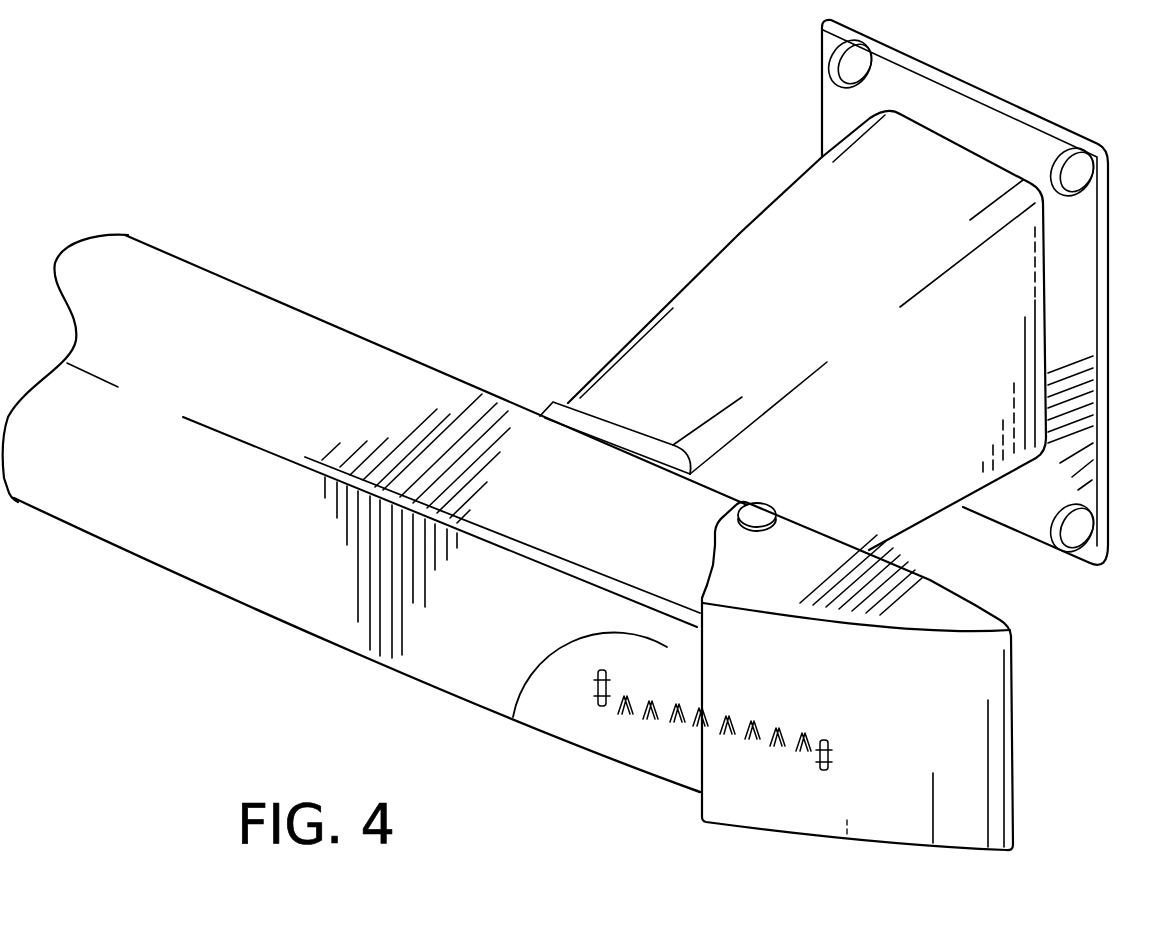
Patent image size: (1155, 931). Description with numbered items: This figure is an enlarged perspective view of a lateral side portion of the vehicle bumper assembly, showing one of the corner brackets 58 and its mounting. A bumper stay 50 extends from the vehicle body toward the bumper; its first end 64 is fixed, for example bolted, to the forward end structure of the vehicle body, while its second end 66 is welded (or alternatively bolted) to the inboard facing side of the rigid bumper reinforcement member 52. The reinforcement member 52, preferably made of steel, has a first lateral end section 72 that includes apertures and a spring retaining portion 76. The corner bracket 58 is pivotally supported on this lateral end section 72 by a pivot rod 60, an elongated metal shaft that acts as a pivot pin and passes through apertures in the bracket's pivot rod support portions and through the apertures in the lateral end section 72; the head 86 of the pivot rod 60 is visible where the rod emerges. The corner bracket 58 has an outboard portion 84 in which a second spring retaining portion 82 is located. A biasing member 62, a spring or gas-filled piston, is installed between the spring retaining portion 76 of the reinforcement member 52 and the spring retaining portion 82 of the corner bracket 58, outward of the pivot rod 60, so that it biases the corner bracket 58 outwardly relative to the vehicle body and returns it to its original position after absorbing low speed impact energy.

The bumper stay 50 is at (788, 252).
The rigid bumper reinforcement member 52 is at (228, 338).
The corner bracket 58 is at (888, 712).
The pivot rod 60 is at (825, 495).
The biasing member 62 is at (655, 727).
The first end 64 is at (973, 127).
The second end 66 is at (612, 407).
The first lateral end section 72 is at (513, 717).
The spring retaining portion 76 is at (583, 717).
The spring retaining portion 82 is at (800, 787).
The outboard portion 84 is at (963, 823).
The head 86 is at (757, 515).